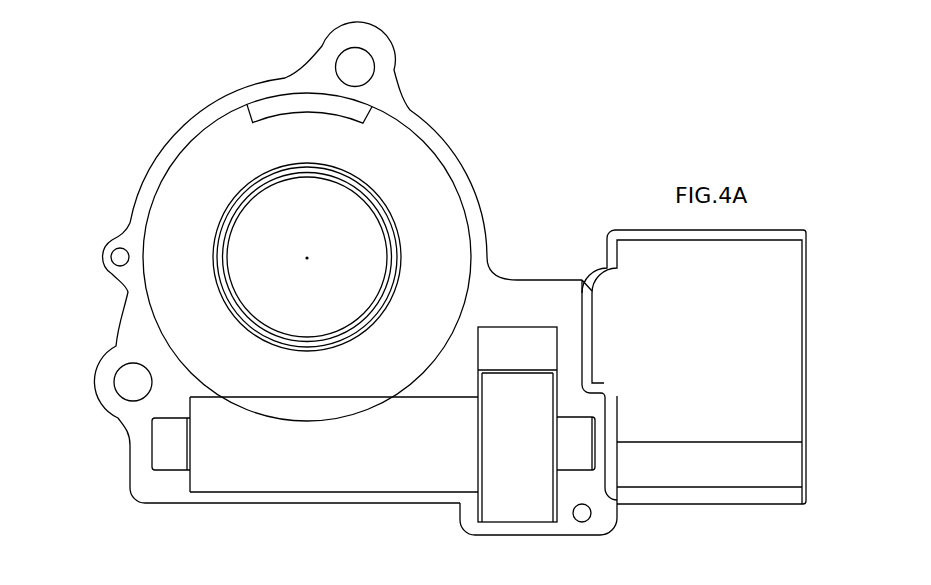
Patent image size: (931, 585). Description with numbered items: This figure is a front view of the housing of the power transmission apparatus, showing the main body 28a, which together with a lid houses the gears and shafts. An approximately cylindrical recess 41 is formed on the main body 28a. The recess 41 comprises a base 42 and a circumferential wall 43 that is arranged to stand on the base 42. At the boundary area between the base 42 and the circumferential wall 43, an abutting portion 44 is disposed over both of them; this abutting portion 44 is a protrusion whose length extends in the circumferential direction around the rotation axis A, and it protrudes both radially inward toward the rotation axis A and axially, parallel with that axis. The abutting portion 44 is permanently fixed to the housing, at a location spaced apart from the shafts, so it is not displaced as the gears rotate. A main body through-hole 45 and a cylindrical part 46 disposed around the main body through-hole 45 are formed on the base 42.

The main body 28a is at (587, 107).
The approximately cylindrical recess 41 is at (208, 160).
The base 42 is at (237, 133).
The circumferential wall 43 is at (415, 118).
The abutting portion 44 is at (290, 108).
The main body through-hole 45 is at (231, 244).
The cylindrical part 46 is at (233, 202).